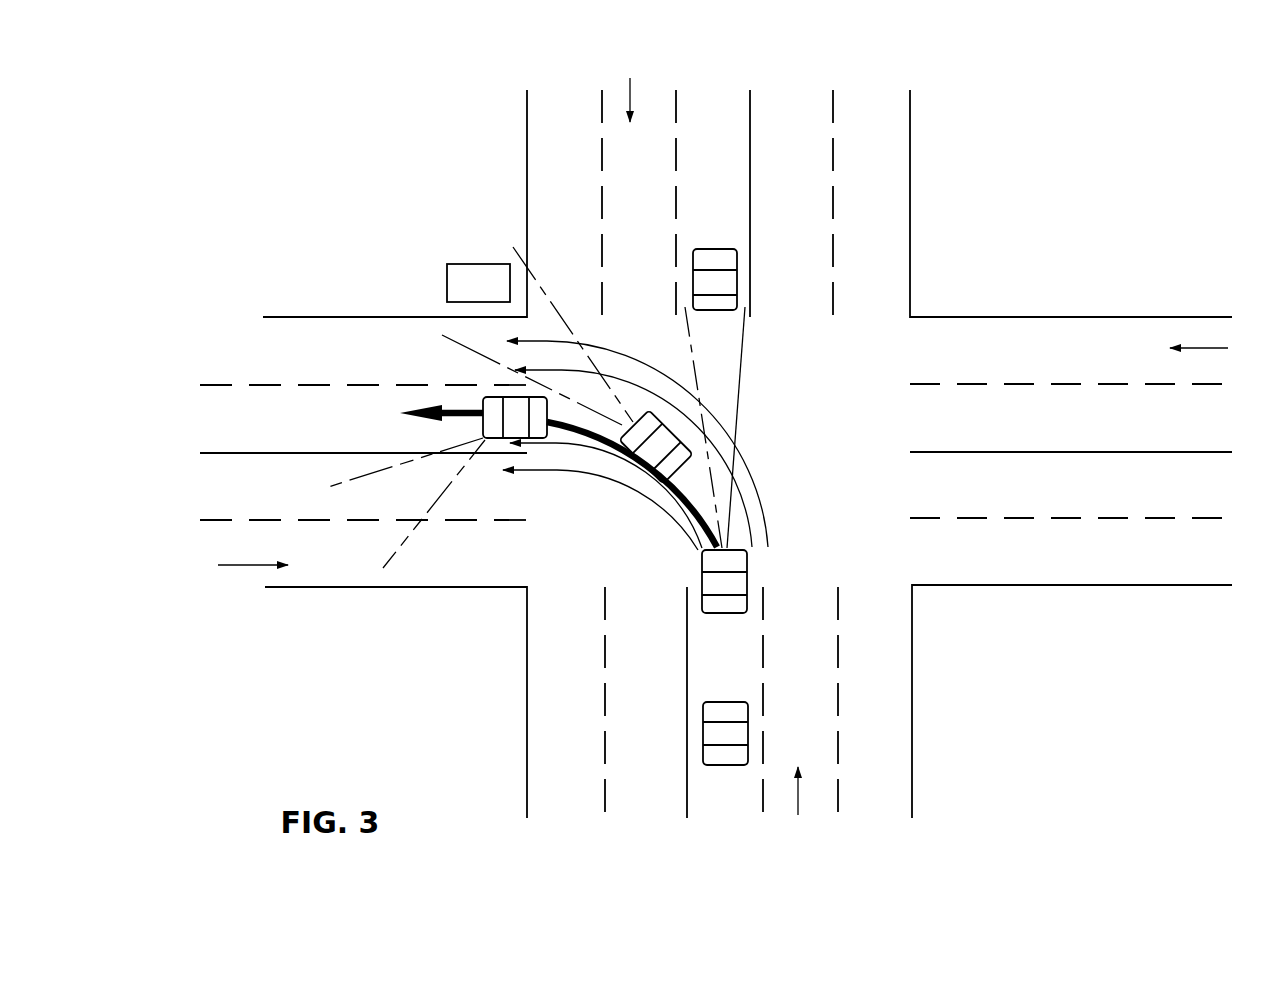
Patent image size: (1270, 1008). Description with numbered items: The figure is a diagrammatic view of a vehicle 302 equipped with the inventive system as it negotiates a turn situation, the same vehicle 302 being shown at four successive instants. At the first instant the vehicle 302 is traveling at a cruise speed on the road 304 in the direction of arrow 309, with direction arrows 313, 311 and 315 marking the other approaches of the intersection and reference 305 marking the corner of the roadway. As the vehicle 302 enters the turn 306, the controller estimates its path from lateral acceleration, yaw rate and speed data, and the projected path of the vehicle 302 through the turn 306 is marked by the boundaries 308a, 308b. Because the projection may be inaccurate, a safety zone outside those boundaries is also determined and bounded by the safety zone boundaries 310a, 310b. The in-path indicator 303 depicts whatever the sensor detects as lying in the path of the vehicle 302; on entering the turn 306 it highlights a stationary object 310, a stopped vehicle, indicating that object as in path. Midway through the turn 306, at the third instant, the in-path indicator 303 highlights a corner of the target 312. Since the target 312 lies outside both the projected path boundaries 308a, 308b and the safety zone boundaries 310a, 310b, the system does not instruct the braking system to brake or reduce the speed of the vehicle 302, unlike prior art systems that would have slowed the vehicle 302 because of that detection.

The vehicle 302 is at (503, 397).
The in-path indicator 303 is at (548, 338).
The road 304 is at (887, 665).
The road segment 305 is at (288, 338).
The turn 306 is at (602, 455).
The projected path boundary 308a is at (699, 549).
The projected path boundary 308b is at (748, 470).
The arrow 309 is at (798, 790).
The stationary object 310 is at (722, 249).
The safety zone boundary 310a is at (698, 548).
The safety zone boundary 310b is at (770, 497).
The travel direction arrow 311 is at (1193, 348).
The target 312 is at (447, 281).
The travel direction arrow 313 is at (628, 95).
The travel direction arrow 315 is at (252, 566).